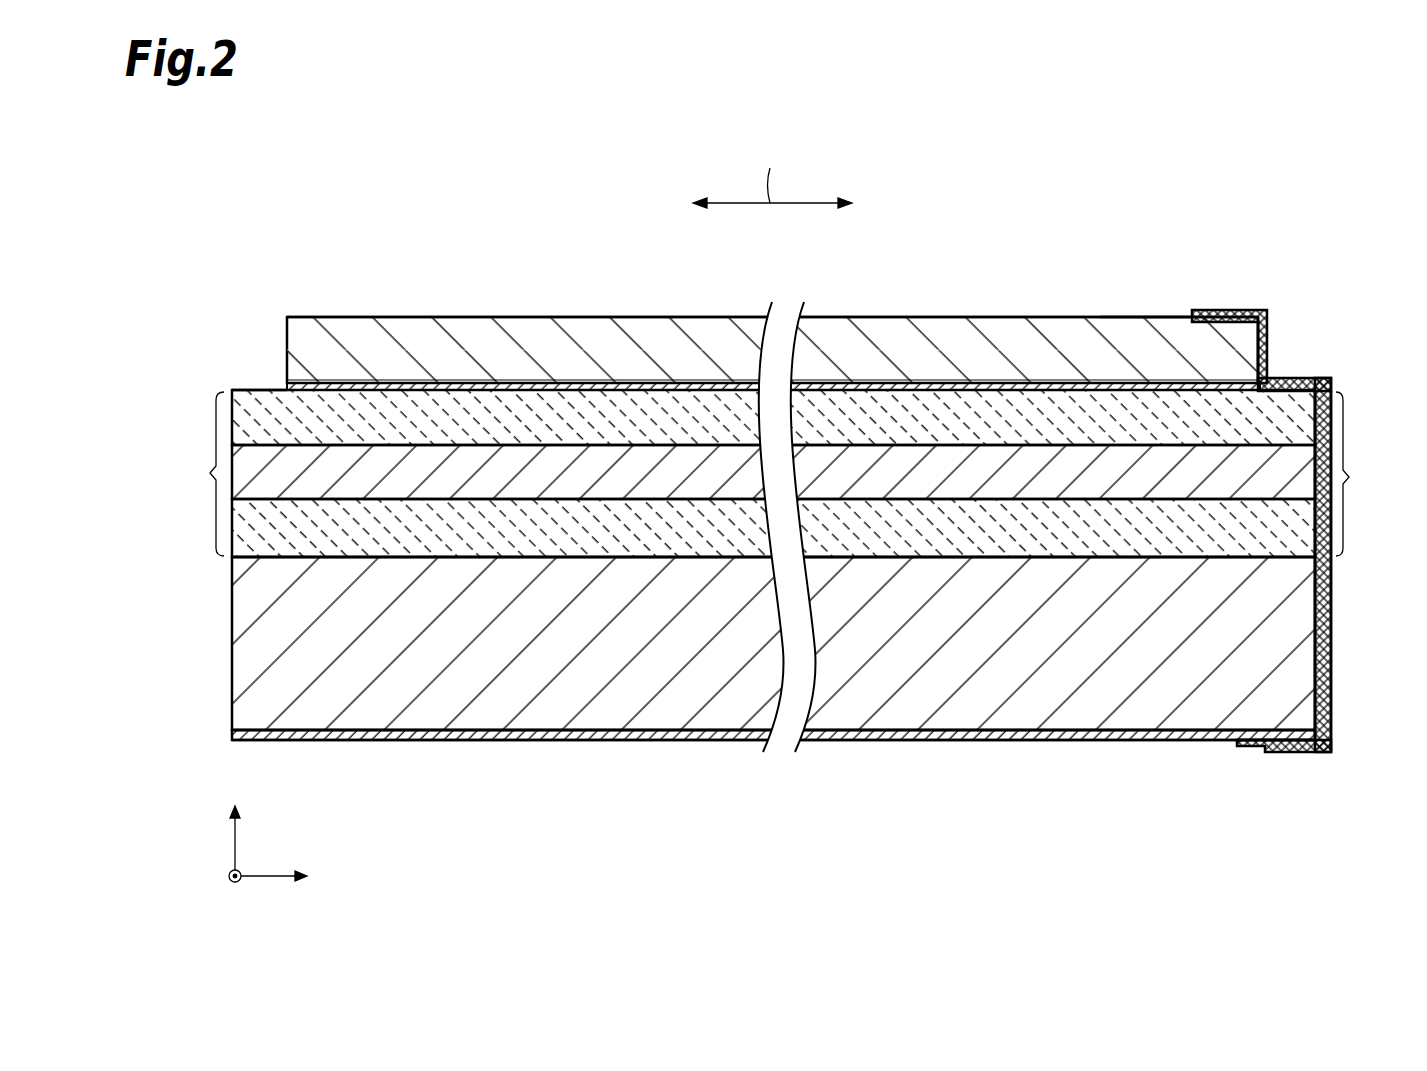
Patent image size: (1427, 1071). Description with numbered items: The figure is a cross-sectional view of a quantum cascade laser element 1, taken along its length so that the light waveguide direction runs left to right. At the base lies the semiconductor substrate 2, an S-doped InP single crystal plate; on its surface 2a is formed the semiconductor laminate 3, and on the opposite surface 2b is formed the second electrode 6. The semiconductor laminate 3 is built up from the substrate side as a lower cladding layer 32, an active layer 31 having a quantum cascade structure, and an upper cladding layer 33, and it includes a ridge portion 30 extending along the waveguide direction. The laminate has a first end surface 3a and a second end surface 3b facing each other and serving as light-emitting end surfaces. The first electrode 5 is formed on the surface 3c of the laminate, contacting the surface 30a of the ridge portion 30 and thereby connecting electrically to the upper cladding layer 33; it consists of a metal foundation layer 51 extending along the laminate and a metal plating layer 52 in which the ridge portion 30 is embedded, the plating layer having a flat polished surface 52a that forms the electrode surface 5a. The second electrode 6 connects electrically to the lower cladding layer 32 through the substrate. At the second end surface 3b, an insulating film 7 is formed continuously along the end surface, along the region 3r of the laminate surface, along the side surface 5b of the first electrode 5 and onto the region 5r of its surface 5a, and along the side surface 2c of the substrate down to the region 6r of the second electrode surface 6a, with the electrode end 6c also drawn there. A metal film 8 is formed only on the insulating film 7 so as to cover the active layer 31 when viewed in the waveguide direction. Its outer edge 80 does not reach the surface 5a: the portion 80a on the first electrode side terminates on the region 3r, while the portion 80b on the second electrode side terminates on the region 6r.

The quantum cascade laser element 1 is at (1033, 251).
The semiconductor substrate 2 is at (955, 712).
The surface of semiconductor substrate 2a is at (1222, 543).
The surface of semiconductor substrate 2b is at (1218, 742).
The side surface of semiconductor substrate 2c is at (1332, 648).
The semiconductor laminate 3 is at (781, 437).
The first end surface 3a is at (199, 474).
The second end surface 3b is at (1362, 474).
The surface of semiconductor laminate 3c is at (773, 309).
The region of surface of semiconductor laminate 3r is at (1297, 380).
The first electrode 5 is at (1096, 318).
The surface of first electrode 5a is at (1165, 317).
The side surface of first electrode 5b is at (1262, 330).
The region of surface of first electrode 5r is at (1235, 311).
The second electrode 6 is at (527, 738).
The surface of second electrode 6a is at (1155, 742).
The end surface of lower electrode 6c is at (1320, 734).
The region of surface of second electrode 6r is at (1293, 750).
The insulating film 7 is at (1332, 683).
The metal film 8 is at (1332, 578).
The ridge portion 30 is at (972, 390).
The surface of ridge portion 30a is at (852, 383).
The active layer 31 is at (330, 476).
The lower cladding layer 32 is at (393, 527).
The upper cladding layer 33 is at (246, 406).
The metal foundation layer 51 is at (553, 380).
The metal plating layer 52 is at (632, 345).
The surface of metal plating layer 52a is at (718, 318).
The outer edge of metal film 80 is at (1303, 577).
The portion of outer edge on first electrode side 80a is at (1263, 350).
The portion of outer edge on second electrode side 80b is at (1265, 748).